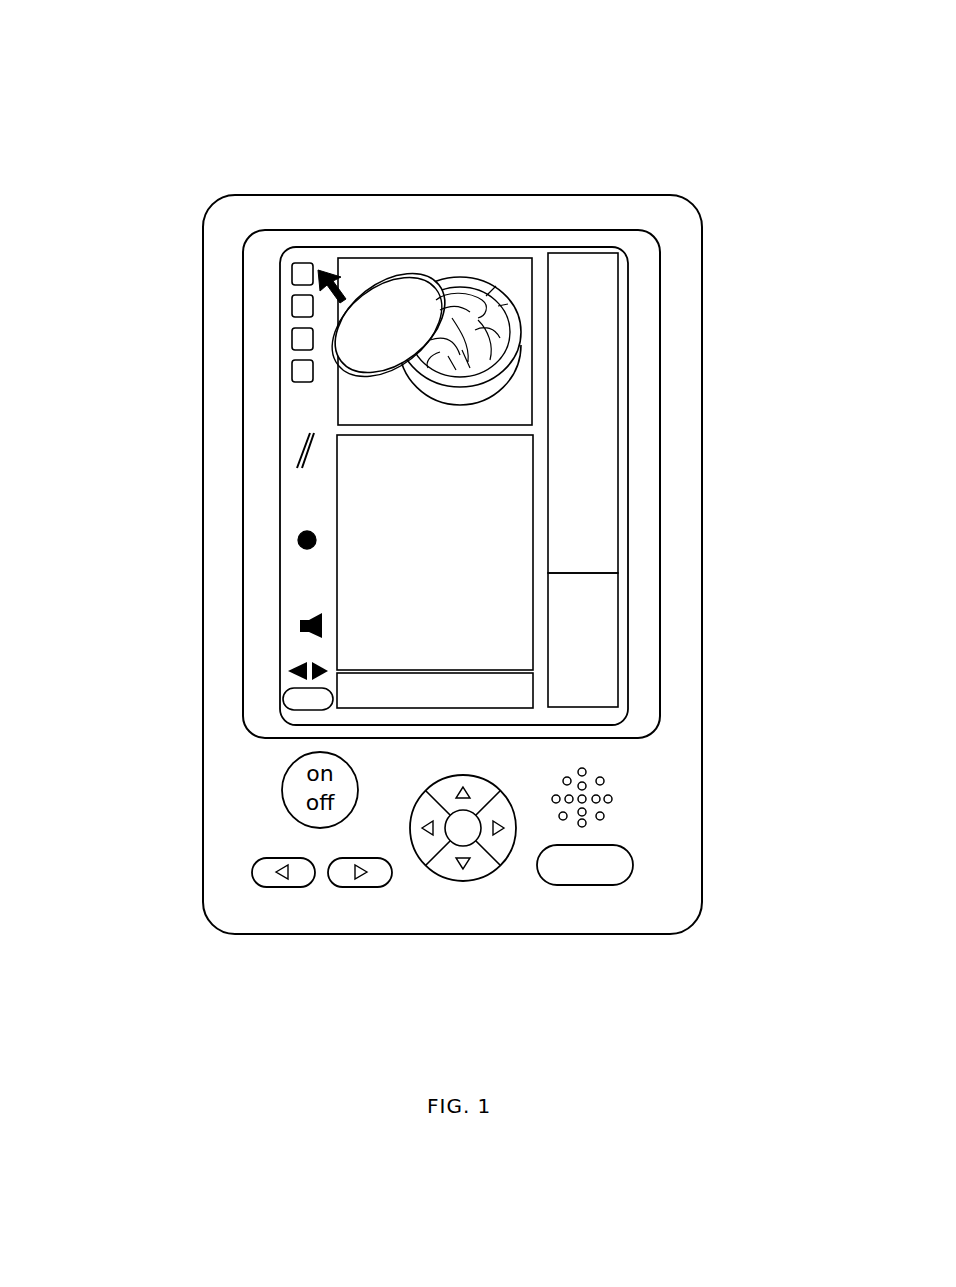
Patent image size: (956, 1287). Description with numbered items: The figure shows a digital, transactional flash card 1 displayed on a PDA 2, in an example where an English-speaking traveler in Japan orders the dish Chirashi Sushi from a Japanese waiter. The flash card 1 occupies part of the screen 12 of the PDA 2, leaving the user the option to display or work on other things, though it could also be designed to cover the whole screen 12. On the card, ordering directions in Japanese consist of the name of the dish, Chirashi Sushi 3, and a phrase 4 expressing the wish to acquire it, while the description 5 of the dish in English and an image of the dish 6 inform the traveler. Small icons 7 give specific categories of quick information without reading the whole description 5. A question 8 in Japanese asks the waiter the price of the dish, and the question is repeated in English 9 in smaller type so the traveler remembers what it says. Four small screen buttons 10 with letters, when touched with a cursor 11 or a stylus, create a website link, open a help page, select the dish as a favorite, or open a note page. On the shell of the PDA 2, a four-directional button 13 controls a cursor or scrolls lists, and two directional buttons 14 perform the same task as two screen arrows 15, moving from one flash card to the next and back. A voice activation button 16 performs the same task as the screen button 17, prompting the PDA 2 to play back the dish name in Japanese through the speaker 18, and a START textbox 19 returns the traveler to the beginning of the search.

The digital, transactional flash card 1 is at (563, 248).
The PDA 2 is at (612, 110).
The Chirashi Sushi 3 is at (608, 323).
The phrase 4 is at (612, 643).
The description 5 is at (530, 548).
The image of the dish 6 is at (428, 270).
The small icons 7 is at (297, 537).
The question 8 is at (533, 690).
The question repeated in English 9 is at (480, 718).
The small screen buttons 10 is at (290, 371).
The cursor 11 is at (324, 268).
The screen 12 is at (643, 260).
The four-directional button 13 is at (478, 868).
The directional buttons 14 is at (250, 877).
The screen arrows 15 is at (283, 671).
The voice activation button 16 is at (632, 865).
The screen button 17 is at (290, 628).
The speaker 18 is at (611, 805).
The START textbox 19 is at (280, 707).